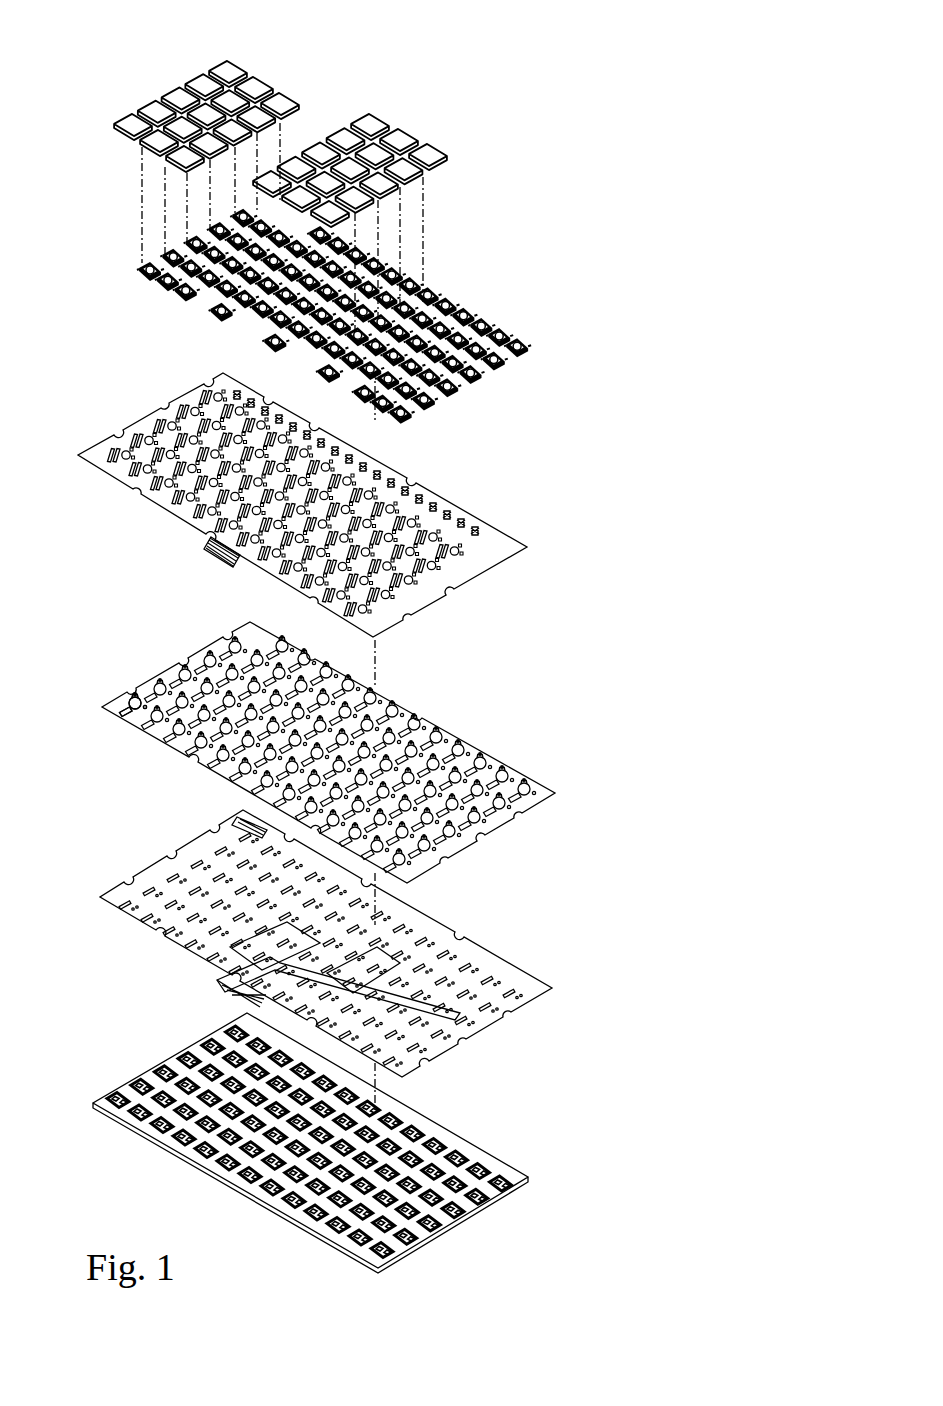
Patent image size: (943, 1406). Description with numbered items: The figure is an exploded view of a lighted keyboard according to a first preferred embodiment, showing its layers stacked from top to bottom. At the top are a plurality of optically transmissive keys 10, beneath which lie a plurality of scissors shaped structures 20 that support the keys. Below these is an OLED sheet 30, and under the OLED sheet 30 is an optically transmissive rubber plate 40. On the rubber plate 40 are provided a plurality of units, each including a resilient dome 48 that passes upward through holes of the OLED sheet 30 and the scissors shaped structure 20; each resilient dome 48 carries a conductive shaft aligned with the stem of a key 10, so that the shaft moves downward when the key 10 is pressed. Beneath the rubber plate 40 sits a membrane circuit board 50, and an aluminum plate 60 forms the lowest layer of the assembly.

The optically transmissive key 10 is at (229, 70).
The scissors shaped structure 20 is at (124, 254).
The OLED sheet 30 is at (495, 545).
The rubber plate 40 is at (527, 802).
The resilient dome 48 is at (135, 700).
The membrane circuit board 50 is at (523, 988).
The aluminum plate 60 is at (530, 1178).